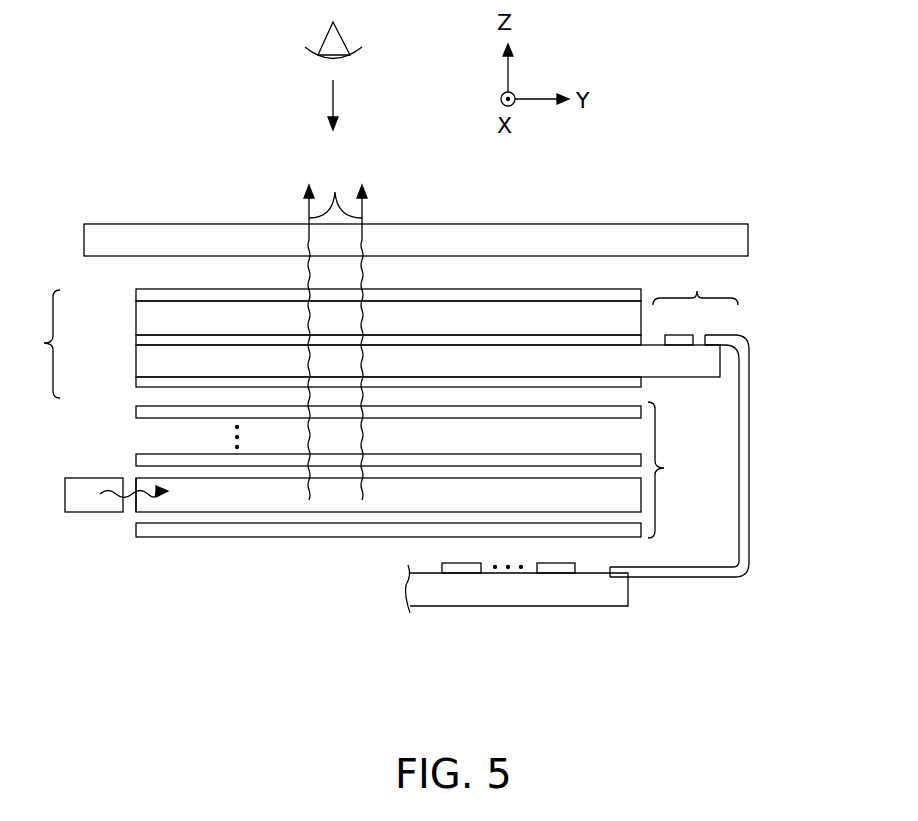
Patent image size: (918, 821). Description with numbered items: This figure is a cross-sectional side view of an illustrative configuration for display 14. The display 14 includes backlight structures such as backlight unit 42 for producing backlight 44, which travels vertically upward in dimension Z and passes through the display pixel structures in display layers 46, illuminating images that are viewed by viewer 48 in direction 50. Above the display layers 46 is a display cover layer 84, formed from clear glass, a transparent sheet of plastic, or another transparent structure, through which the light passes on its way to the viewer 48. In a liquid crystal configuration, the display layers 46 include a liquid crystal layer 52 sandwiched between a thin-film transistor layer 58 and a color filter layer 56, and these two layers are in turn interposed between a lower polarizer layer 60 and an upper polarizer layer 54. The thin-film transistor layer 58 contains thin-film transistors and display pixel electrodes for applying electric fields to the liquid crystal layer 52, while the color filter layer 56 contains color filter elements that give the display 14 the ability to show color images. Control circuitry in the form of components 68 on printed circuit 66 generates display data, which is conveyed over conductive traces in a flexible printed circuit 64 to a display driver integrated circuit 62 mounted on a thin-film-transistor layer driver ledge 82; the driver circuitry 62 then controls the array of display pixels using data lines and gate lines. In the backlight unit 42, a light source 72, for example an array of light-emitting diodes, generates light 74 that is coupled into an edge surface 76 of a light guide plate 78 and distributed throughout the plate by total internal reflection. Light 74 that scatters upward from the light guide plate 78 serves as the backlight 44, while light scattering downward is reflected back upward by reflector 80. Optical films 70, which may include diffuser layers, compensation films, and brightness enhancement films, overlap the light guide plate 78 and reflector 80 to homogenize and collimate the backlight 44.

The display 14 is at (676, 124).
The backlight unit 42 is at (674, 470).
The backlight 44 is at (335, 333).
The display layers 46 is at (35, 344).
The viewer 48 is at (339, 34).
The direction 50 is at (336, 97).
The liquid crystal layer 52 is at (234, 340).
The upper polarizer layer 54 is at (170, 289).
The color filter layer 56 is at (138, 315).
The thin-film transistor layer 58 is at (138, 360).
The lower polarizer layer 60 is at (136, 384).
The display driver integrated circuit 62 is at (680, 336).
The flexible printed circuit 64 is at (750, 445).
The printed circuit 66 is at (470, 598).
The components 68 is at (553, 563).
The optical films 70 is at (136, 413).
The light source 72 is at (72, 505).
The light 74 is at (130, 490).
The edge surface 76 is at (130, 508).
The light guide plate 78 is at (225, 500).
The reflector 80 is at (175, 530).
The thin-film-transistor layer driver ledge 82 is at (695, 282).
The display cover layer 84 is at (526, 236).